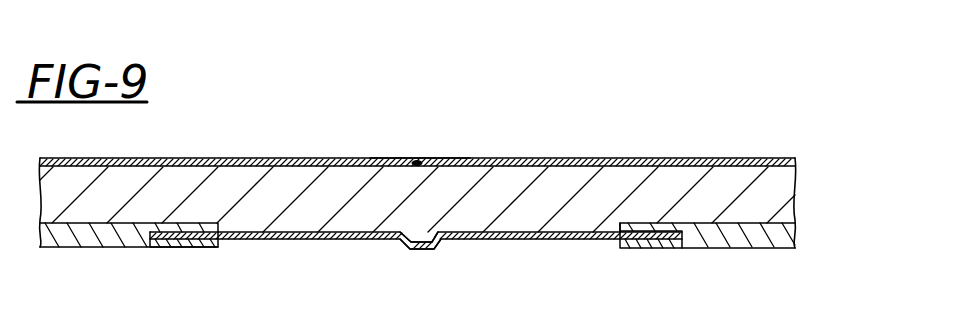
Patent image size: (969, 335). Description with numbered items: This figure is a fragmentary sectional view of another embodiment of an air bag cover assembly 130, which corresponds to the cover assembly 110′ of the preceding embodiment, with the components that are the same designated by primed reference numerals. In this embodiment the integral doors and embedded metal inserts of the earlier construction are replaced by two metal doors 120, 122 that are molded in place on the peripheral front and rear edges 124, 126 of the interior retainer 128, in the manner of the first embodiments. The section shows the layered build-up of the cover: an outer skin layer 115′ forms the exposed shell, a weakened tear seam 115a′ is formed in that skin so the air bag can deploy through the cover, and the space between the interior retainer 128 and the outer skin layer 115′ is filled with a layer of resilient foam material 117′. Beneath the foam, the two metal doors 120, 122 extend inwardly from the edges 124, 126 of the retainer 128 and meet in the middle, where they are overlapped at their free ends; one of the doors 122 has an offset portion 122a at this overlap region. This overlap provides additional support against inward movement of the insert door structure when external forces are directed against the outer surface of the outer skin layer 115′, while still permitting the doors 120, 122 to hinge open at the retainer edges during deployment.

The cover assembly 110′ is at (292, 156).
The cover assembly 130 is at (697, 154).
The outer skin layer 115′ is at (380, 162).
The weakened tear seam 115a′ is at (432, 162).
The layer of resilient foam material 117′ is at (90, 172).
The metal door 120 is at (282, 244).
The metal door 122 is at (523, 242).
The strip offset portion 122a is at (427, 231).
The interior retainer 128 is at (72, 248).
The peripheral front edge 124 is at (192, 248).
The peripheral rear edge 126 is at (647, 247).